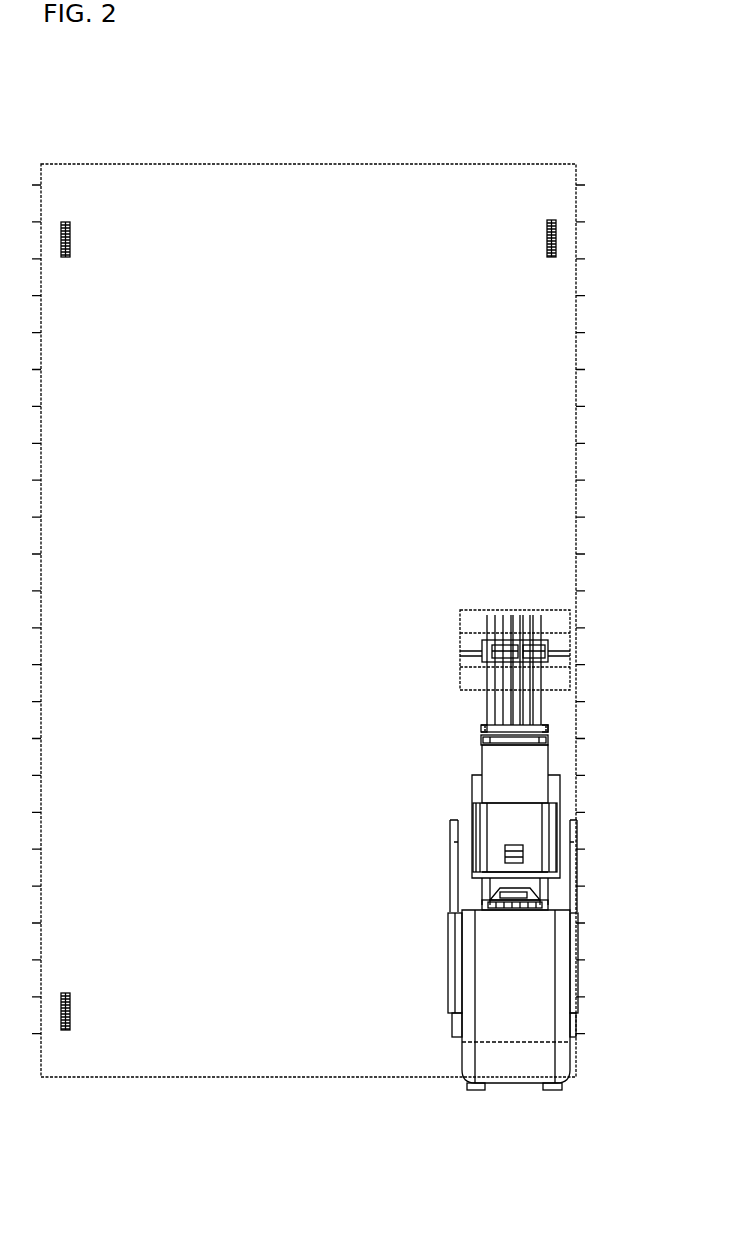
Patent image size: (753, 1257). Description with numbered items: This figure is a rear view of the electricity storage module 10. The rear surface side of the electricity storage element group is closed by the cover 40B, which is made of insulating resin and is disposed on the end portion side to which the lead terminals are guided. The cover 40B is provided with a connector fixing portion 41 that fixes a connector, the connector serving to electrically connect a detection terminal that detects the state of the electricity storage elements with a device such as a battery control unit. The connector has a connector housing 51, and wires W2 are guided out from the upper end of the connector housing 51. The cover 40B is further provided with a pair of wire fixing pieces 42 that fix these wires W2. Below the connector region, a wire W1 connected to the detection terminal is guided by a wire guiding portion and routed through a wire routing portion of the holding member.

The electricity storage module 10 is at (345, 97).
The cover on the rear surface side 40B is at (468, 187).
The wire fixing pieces 42 is at (537, 650).
The wires W2 is at (540, 701).
The connector housing 51 is at (530, 771).
The connector fixing portion 41 is at (555, 793).
The wire W1 is at (540, 907).